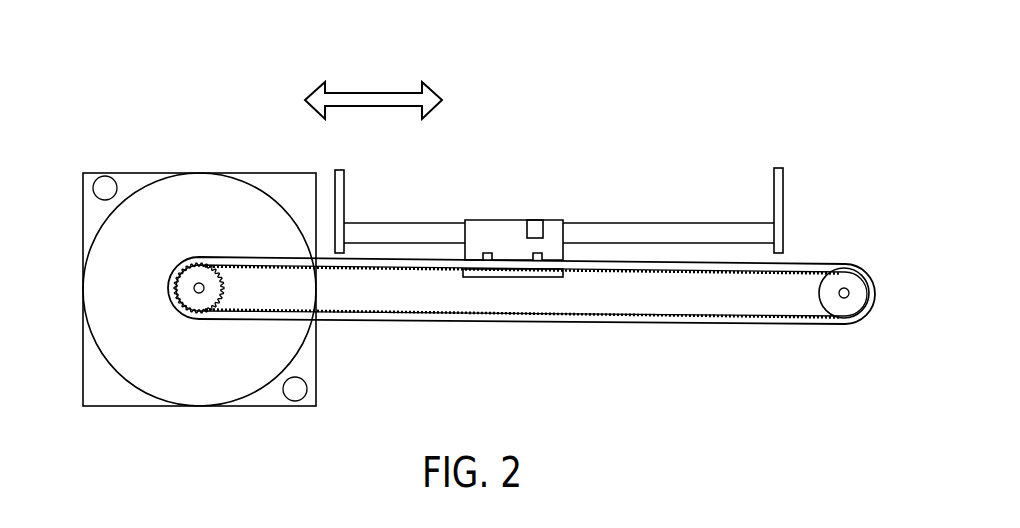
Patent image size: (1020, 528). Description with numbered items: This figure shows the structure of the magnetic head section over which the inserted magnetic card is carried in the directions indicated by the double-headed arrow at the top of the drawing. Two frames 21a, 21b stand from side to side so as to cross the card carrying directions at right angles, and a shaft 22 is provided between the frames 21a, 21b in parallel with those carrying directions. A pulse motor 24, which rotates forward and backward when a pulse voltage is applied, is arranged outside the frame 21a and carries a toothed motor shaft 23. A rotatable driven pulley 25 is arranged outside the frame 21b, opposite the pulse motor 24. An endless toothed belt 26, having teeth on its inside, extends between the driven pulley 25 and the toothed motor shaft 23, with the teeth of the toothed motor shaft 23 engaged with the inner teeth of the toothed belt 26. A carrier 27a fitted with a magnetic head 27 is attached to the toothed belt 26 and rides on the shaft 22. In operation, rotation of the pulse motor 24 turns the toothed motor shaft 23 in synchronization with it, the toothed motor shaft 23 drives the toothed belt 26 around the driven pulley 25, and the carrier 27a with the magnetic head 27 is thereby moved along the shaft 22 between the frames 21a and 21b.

The frame 21a is at (344, 190).
The frame 21b is at (783, 183).
The shaft 22 is at (677, 231).
The toothed motor shaft 23 is at (198, 275).
The pulse motor 24 is at (223, 177).
The driven pulley 25 is at (846, 277).
The toothed belt 26 is at (482, 316).
The magnetic head 27 is at (537, 221).
The carrier 27a is at (492, 228).